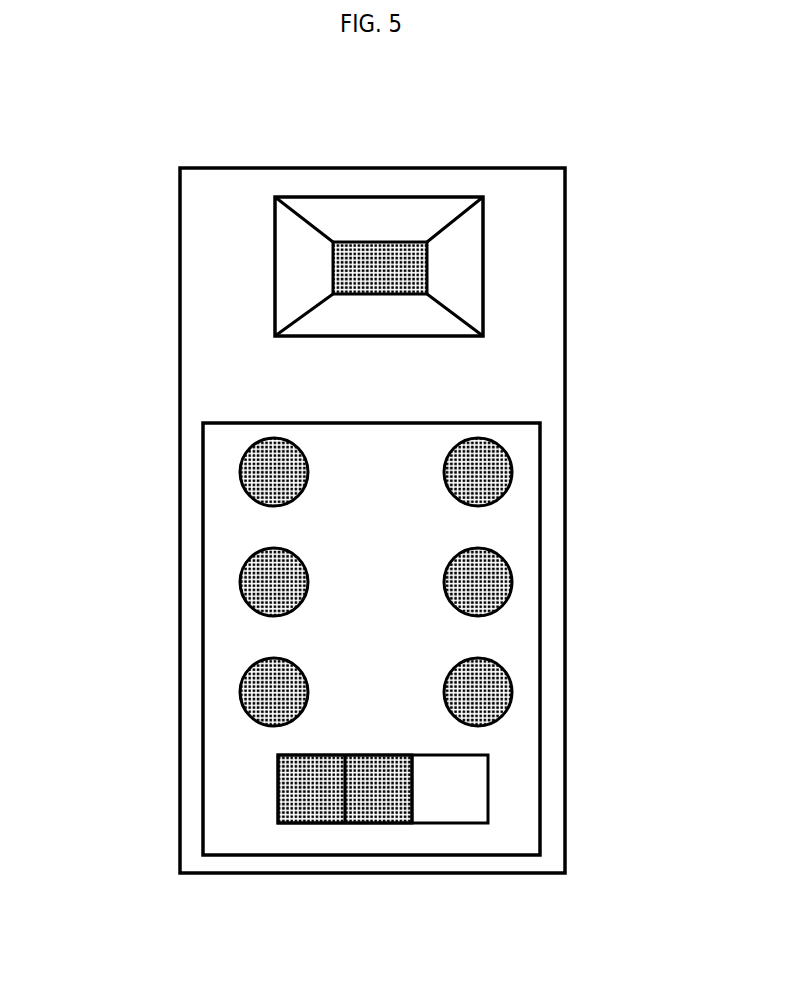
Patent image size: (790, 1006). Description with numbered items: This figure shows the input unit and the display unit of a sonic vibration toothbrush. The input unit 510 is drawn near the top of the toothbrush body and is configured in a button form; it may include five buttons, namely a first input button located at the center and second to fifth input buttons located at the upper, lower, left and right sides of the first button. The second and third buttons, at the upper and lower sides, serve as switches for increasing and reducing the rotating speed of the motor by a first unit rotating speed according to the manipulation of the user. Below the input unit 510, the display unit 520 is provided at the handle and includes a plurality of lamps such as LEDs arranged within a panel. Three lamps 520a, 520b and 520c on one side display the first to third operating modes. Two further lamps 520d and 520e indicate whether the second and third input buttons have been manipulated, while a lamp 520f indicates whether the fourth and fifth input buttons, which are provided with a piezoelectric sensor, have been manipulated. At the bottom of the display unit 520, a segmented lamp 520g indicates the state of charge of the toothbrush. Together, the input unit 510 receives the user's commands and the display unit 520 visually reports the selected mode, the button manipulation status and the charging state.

The input unit 510 is at (458, 265).
The display unit 520 is at (500, 423).
The lamp 520a is at (238, 472).
The lamp 520b is at (238, 582).
The lamp 520c is at (238, 692).
The lamp 520d is at (513, 472).
The lamp 520e is at (513, 582).
The lamp 520f is at (513, 692).
The lamp 520g is at (458, 823).